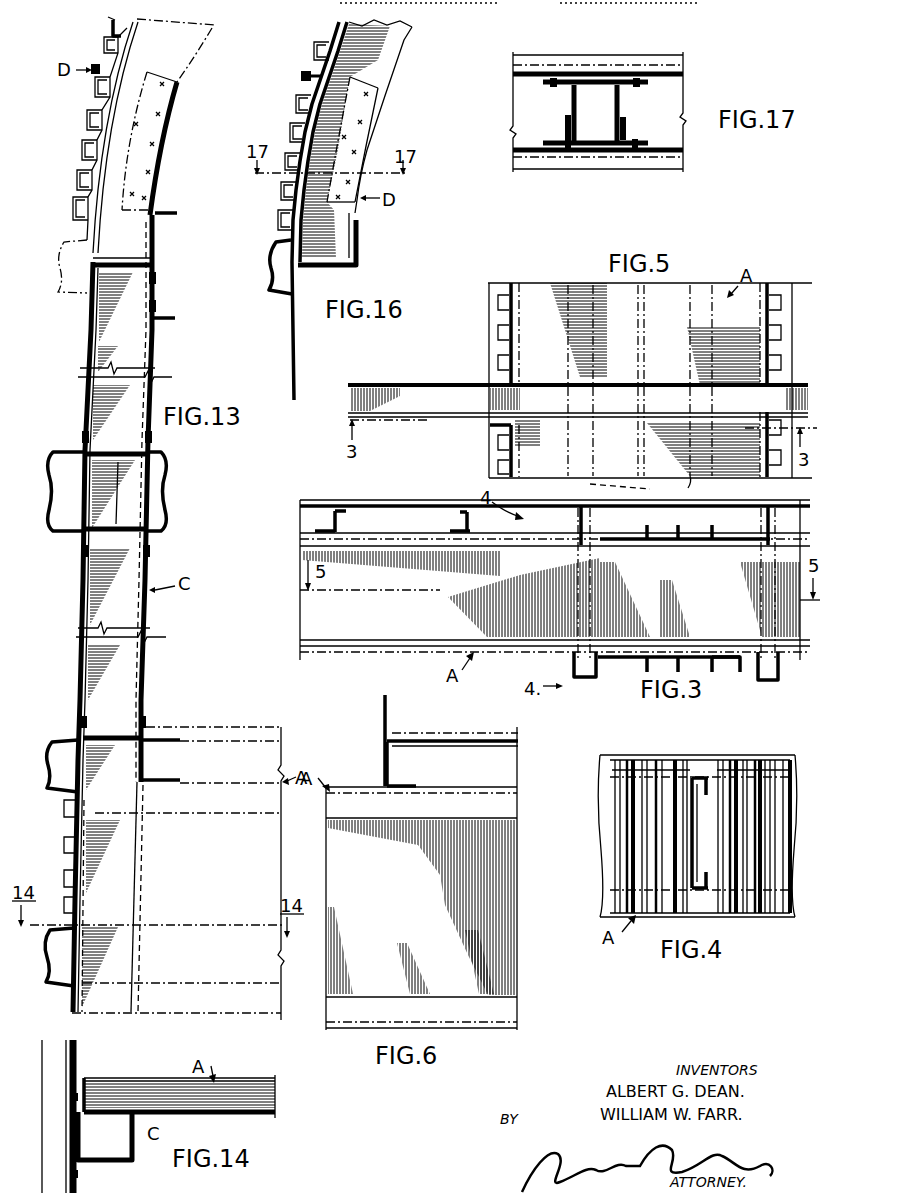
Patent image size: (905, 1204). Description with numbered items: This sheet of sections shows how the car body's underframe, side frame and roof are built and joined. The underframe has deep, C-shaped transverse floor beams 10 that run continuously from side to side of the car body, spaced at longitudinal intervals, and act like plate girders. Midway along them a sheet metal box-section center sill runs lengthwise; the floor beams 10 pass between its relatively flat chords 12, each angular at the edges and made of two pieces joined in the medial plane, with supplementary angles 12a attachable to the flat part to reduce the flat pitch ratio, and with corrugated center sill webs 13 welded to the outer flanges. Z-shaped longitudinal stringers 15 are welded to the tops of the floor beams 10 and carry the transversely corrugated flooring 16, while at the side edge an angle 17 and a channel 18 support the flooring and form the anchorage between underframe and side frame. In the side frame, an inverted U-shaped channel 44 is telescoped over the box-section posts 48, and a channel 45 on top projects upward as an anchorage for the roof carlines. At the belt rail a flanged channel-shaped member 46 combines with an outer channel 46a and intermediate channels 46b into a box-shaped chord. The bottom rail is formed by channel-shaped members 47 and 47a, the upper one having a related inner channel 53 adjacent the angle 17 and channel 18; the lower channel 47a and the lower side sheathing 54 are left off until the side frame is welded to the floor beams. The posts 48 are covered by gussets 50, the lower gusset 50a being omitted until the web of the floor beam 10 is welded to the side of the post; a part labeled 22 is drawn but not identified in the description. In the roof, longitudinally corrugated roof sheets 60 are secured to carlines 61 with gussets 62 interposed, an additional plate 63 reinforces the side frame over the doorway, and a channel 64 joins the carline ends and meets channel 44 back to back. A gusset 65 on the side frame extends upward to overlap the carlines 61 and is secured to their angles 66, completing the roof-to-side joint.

In FIG. 5, the transverse floor beams 10 is at (478, 414).
In FIG. 3, the transverse floor beams 10 is at (315, 610).
In FIG. 6, the transverse floor beams 10 is at (407, 920).
In FIG. 4, the transverse floor beams 10 is at (700, 777).
In FIG. 14, the transverse floor beams 10 is at (115, 1092).
In FIG. 5, the chords 12 is at (674, 468).
In FIG. 3, the chords 12 is at (698, 536).
In FIG. 4, the chords 12 is at (610, 773).
In FIG. 5, the supplementary angles 12a is at (640, 488).
In FIG. 3, the supplementary angles 12a is at (716, 670).
In FIG. 5, the center sill webs 13 is at (500, 336).
In FIG. 4, the center sill webs 13 is at (756, 775).
In FIG. 3, the longitudinal stringers 15 is at (300, 521).
In FIG. 3, the transversely corrugated flooring 16 is at (390, 504).
In FIG. 6, the transversely corrugated flooring 16 is at (466, 740).
In FIG. 6, the angle 17 is at (383, 700).
In FIG. 6, the channel 18 is at (383, 753).
In FIG. 13, the corrugated sheet 22 is at (62, 273).
In FIG. 13, the inverted U-shaped channel 44 is at (115, 270).
In FIG. 13, the channel 45 is at (160, 301).
In FIG. 17, the channel 45 is at (664, 168).
In FIG. 13, the channel-shaped member 46 is at (109, 491).
In FIG. 13, the outer channel 46a is at (50, 506).
In FIG. 13, the intermediate channels 46b is at (118, 525).
In FIG. 13, the channel-shaped member 47 is at (50, 746).
In FIG. 13, the lower channel 47a is at (52, 990).
In FIG. 14, the lower channel 47a is at (43, 1078).
In FIG. 13, the posts 48 is at (147, 666).
In FIG. 14, the posts 48 is at (130, 1161).
In FIG. 13, the gussets 50 is at (80, 605).
In FIG. 13, the lower gusset 50a is at (86, 908).
In FIG. 14, the lower gusset 50a is at (79, 1058).
In FIG. 13, the inner channel 53 is at (103, 735).
In FIG. 13, the lower side sheathing 54 is at (66, 824).
In FIG. 16, the roof sheets 60 is at (298, 183).
In FIG. 16, the roof carlines 61 is at (395, 52).
In FIG. 17, the roof carlines 61 is at (645, 90).
In FIG. 16, the gussets 62 is at (330, 30).
In FIG. 16, the additional plate 63 is at (297, 124).
In FIG. 16, the channel 64 is at (350, 270).
In FIG. 13, the gusset 65 is at (170, 111).
In FIG. 17, the gusset 65 is at (617, 147).
In FIG. 16, the angles 66 is at (362, 138).
In FIG. 17, the angles 66 is at (565, 126).